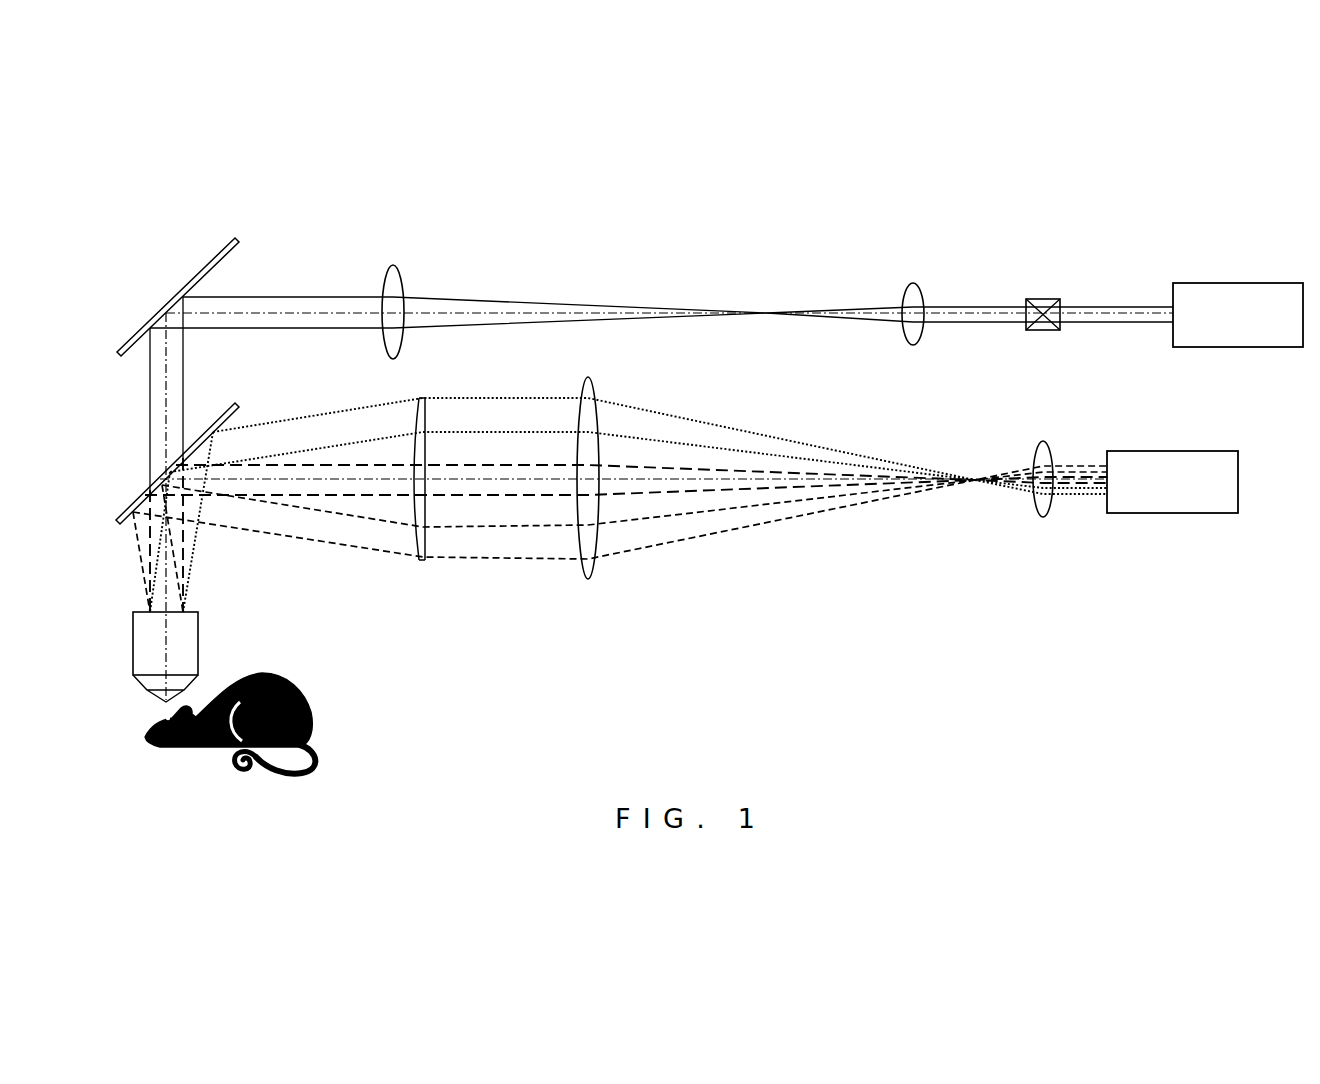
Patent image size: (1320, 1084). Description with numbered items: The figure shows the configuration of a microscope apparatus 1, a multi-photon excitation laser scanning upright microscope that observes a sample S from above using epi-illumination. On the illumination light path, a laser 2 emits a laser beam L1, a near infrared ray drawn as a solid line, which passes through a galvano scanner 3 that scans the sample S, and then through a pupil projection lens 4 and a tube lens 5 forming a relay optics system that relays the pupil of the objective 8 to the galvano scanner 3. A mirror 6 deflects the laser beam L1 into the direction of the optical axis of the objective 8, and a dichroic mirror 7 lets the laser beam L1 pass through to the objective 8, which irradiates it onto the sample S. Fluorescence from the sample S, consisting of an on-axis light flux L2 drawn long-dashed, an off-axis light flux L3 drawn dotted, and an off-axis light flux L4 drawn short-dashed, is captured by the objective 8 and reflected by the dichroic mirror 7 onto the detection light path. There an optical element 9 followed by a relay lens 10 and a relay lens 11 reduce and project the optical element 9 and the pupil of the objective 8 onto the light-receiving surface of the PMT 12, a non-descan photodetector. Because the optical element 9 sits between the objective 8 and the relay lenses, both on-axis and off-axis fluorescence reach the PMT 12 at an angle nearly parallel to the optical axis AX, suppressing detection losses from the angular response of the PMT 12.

The microscope apparatus 1 is at (1230, 192).
The laser 2 is at (1188, 283).
The galvano scanner 3 is at (1040, 299).
The pupil projection lens 4 is at (917, 283).
The tube lens 5 is at (396, 266).
The mirror 6 is at (192, 273).
The dichroic mirror 7 is at (140, 501).
The objective 8 is at (133, 657).
The optical element 9 is at (424, 561).
The relay lens 10 is at (588, 580).
The relay lens 11 is at (1043, 518).
The PMT 12 is at (1175, 513).
The sample S is at (286, 675).
The optical axis AX is at (268, 478).
The laser beam L1 is at (465, 300).
The on-axis light flux L2 is at (450, 470).
The off-axis light flux L3 is at (532, 418).
The off-axis light flux L4 is at (546, 556).